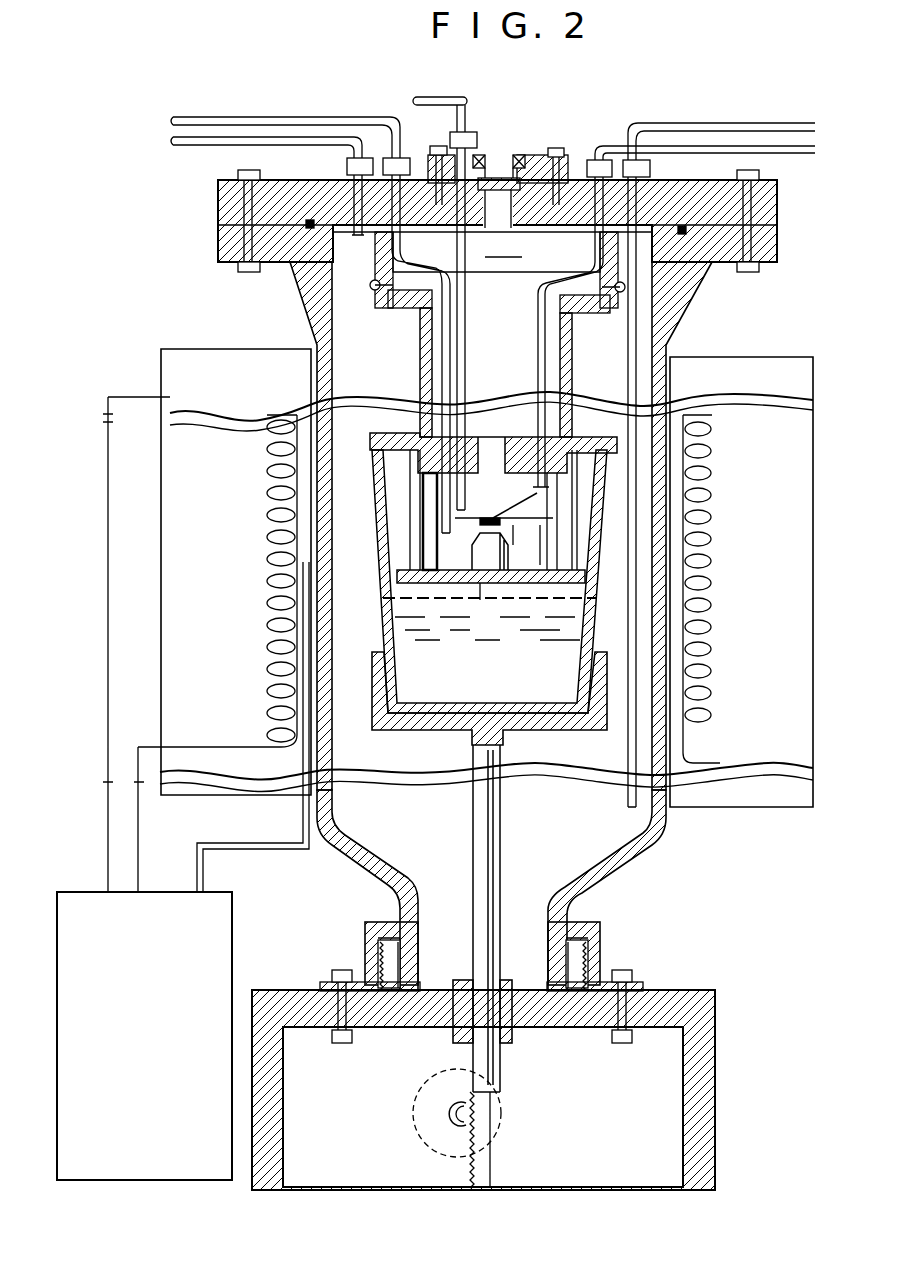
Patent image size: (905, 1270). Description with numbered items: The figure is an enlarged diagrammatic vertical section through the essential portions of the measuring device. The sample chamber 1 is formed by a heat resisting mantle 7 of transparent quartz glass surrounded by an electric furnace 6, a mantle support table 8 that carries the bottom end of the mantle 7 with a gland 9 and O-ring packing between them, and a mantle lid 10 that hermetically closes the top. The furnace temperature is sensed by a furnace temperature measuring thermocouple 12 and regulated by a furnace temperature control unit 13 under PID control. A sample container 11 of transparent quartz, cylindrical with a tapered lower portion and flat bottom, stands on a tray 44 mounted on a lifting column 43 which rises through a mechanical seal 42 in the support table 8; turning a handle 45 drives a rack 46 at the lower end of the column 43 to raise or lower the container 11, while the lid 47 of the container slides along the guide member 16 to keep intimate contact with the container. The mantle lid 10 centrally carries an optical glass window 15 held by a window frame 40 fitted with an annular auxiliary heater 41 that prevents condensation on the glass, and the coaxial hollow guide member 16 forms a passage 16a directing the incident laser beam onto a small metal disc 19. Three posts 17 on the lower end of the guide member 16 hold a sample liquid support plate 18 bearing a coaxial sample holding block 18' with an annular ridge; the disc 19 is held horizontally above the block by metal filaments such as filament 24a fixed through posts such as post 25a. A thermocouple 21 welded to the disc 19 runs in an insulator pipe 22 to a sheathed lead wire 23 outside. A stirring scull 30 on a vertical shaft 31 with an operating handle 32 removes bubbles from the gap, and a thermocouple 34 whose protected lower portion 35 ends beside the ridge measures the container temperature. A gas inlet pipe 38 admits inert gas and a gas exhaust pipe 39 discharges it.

The sample chamber 1 is at (668, 340).
The electric furnace 6 is at (170, 645).
The heat resisting mantle 7 is at (638, 855).
The mantle support table 8 is at (718, 1047).
The gland 9 is at (598, 944).
The mantle lid 10 is at (778, 212).
The sample container 11 is at (384, 637).
The furnace temperature measuring thermocouple 12 is at (303, 605).
The furnace temperature control unit 13 is at (232, 938).
The optical glass window 15 is at (495, 180).
The guide member 16 is at (420, 357).
The passage 16a is at (497, 270).
The posts 17 is at (412, 557).
The sample liquid support plate 18 is at (490, 605).
The sample holding block 18' is at (477, 616).
The small metal disc 19 is at (485, 518).
The thermocouple 21 is at (515, 516).
The insulator pipe 22 is at (536, 373).
The sheathed lead wire 23 is at (668, 124).
The metal filament 24a is at (517, 528).
The post 25a is at (545, 565).
The stirring scull 30 is at (478, 522).
The vertical shaft 31 is at (452, 318).
The operating handle 32 is at (447, 97).
The thermocouple 34 is at (262, 117).
The lower portion of thermocouple 35 is at (442, 496).
The gas inlet pipe 38 is at (690, 153).
The gas exhaust pipe 39 is at (183, 145).
The window frame 40 is at (541, 157).
The annular auxiliary heater 41 is at (478, 157).
The mechanical seal 42 is at (510, 1040).
The lifting column 43 is at (500, 866).
The tray 44 is at (372, 712).
The handle 45 is at (413, 1113).
The rack 46 is at (470, 1158).
The lid of sample container 47 is at (372, 442).